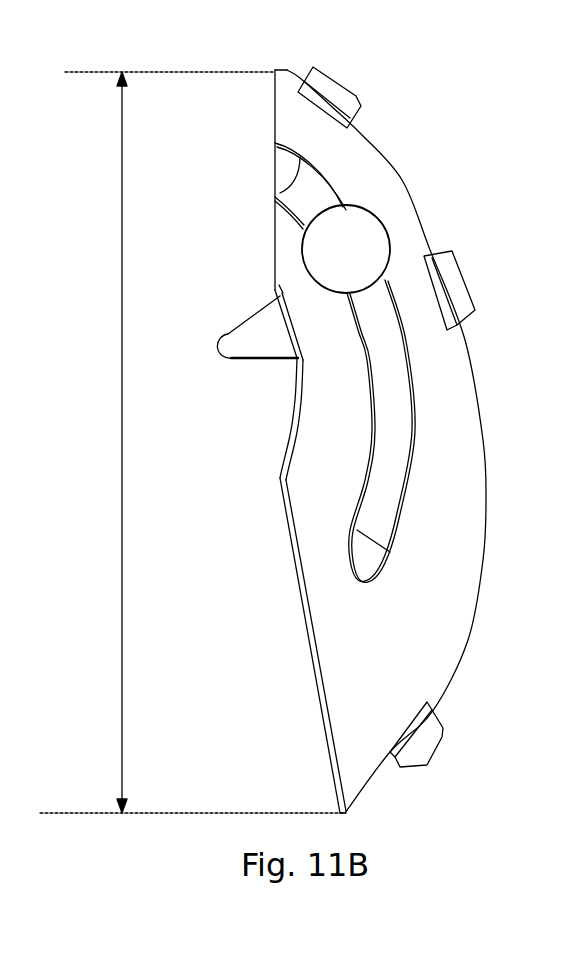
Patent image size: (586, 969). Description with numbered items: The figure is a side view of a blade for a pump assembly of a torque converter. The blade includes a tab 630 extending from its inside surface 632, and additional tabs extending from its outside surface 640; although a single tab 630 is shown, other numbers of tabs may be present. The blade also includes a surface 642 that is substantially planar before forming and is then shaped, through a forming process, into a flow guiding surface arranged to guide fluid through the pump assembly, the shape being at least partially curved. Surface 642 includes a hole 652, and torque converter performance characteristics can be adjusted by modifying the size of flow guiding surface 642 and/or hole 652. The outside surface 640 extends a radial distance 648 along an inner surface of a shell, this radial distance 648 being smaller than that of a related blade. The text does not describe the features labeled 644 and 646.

The tab 630 is at (248, 342).
The inside surface 632 is at (288, 449).
The outside surface 640 is at (478, 378).
The surface 642 is at (455, 545).
The slot 644 is at (377, 310).
The lower edge 646 is at (316, 700).
The radial distance 648 is at (192, 442).
The hole 652 is at (372, 216).